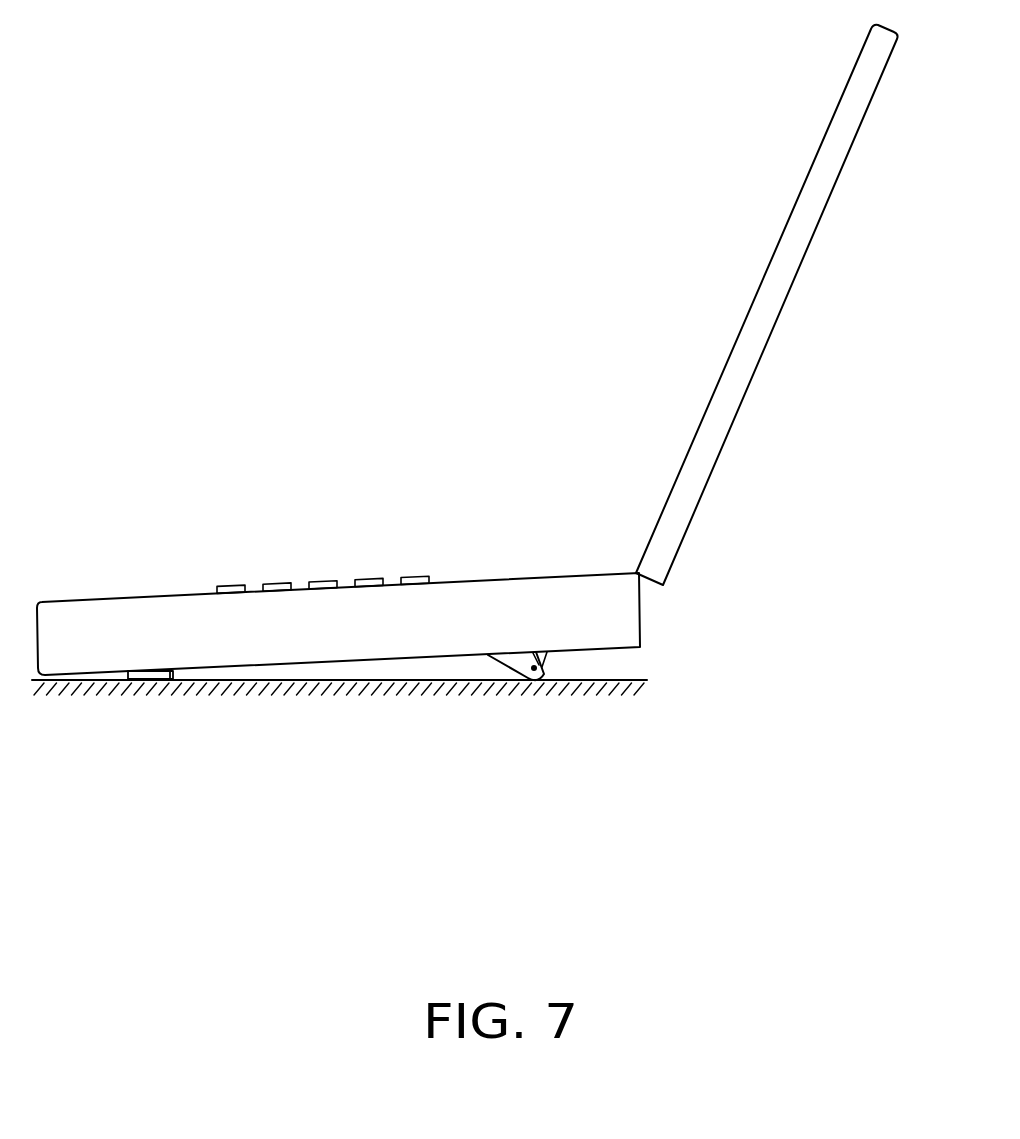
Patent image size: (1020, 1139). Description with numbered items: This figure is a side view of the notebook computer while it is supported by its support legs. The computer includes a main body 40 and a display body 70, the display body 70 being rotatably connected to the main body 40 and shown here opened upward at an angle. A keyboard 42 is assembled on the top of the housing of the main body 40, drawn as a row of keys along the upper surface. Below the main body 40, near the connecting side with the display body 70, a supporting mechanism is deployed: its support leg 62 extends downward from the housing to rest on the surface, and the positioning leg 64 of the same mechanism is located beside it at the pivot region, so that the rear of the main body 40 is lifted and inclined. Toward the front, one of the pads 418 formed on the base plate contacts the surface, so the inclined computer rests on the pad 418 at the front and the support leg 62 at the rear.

The main body 40 is at (112, 619).
The keyboard 42 is at (236, 588).
The pad 418 is at (153, 673).
The display body 70 is at (699, 461).
The support leg 62 is at (517, 664).
The positioning leg 64 is at (543, 657).